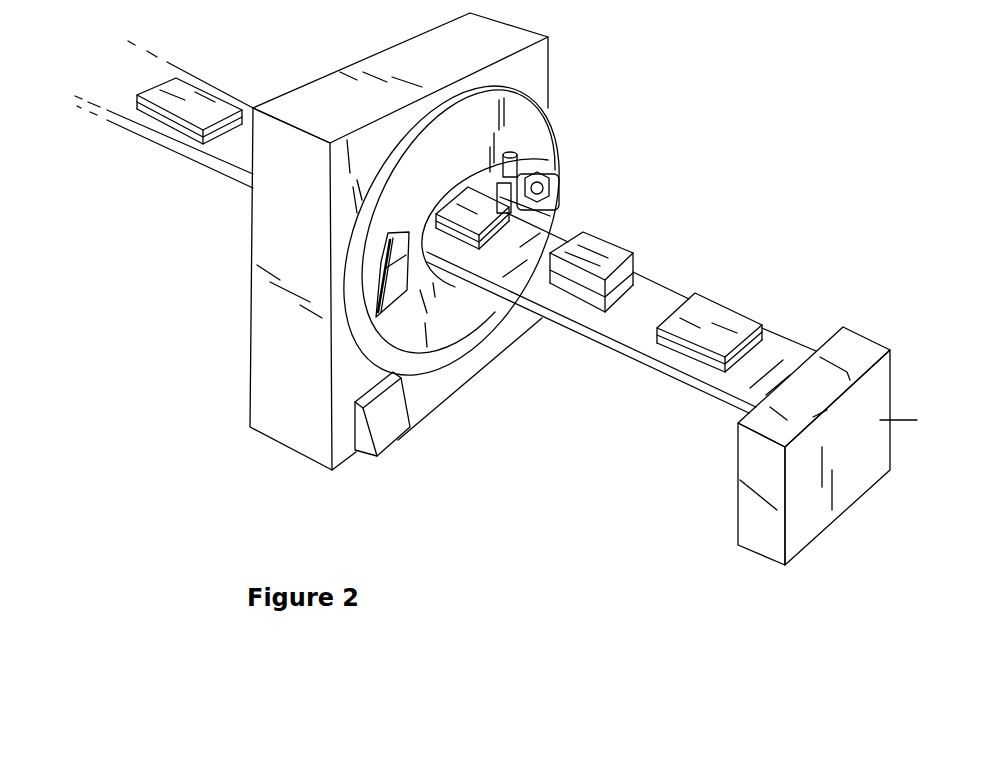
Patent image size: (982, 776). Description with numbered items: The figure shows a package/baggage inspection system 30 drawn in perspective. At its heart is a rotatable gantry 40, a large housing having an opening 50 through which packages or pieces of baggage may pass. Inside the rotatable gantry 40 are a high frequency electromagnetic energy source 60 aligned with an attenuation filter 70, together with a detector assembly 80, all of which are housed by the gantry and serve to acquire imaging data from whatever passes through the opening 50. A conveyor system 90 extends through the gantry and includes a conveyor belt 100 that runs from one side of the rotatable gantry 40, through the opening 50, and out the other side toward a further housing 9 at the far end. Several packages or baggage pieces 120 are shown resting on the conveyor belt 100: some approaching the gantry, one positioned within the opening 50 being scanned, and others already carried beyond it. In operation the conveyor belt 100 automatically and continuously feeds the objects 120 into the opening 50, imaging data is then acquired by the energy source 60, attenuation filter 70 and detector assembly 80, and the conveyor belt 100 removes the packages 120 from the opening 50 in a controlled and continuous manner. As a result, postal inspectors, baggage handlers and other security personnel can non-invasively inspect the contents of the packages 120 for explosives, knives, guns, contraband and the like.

The enclosure housing 9 is at (877, 313).
The package/baggage inspection system 30 is at (738, 155).
The rotatable gantry 40 is at (543, 142).
The opening 50 is at (517, 166).
The high frequency electromagnetic energy source 60 is at (549, 189).
The attenuation filter 70 is at (521, 204).
The detector assembly 80 is at (392, 301).
The conveyor system 90 is at (70, 130).
The conveyor belt 100 is at (218, 153).
The packages or baggage pieces 120 is at (200, 97).